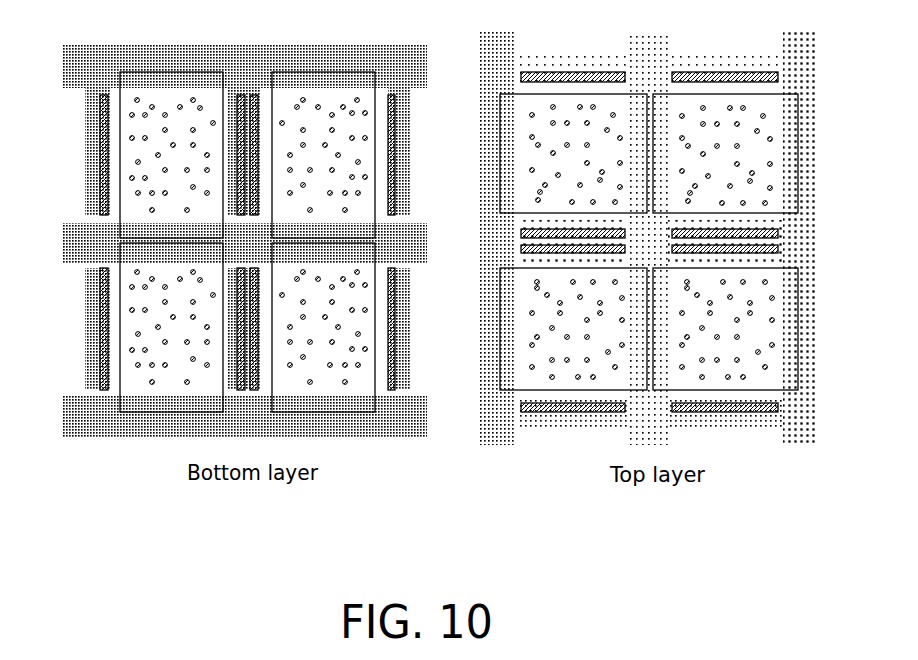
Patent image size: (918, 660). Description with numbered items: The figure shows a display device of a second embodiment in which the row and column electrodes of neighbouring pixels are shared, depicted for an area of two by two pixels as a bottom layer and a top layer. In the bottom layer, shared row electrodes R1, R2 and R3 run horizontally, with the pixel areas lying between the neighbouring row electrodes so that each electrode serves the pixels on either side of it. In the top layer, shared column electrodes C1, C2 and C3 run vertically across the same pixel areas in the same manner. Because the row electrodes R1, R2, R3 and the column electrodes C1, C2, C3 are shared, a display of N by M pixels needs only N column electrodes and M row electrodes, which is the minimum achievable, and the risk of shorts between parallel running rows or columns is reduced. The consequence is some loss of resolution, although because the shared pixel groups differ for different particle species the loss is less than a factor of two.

The shared row electrode R1 is at (227, 66).
The shared row electrode R2 is at (227, 243).
The shared row electrode R3 is at (227, 416).
The shared column electrode C1 is at (496, 223).
The shared column electrode C2 is at (649, 223).
The shared column electrode C3 is at (800, 223).